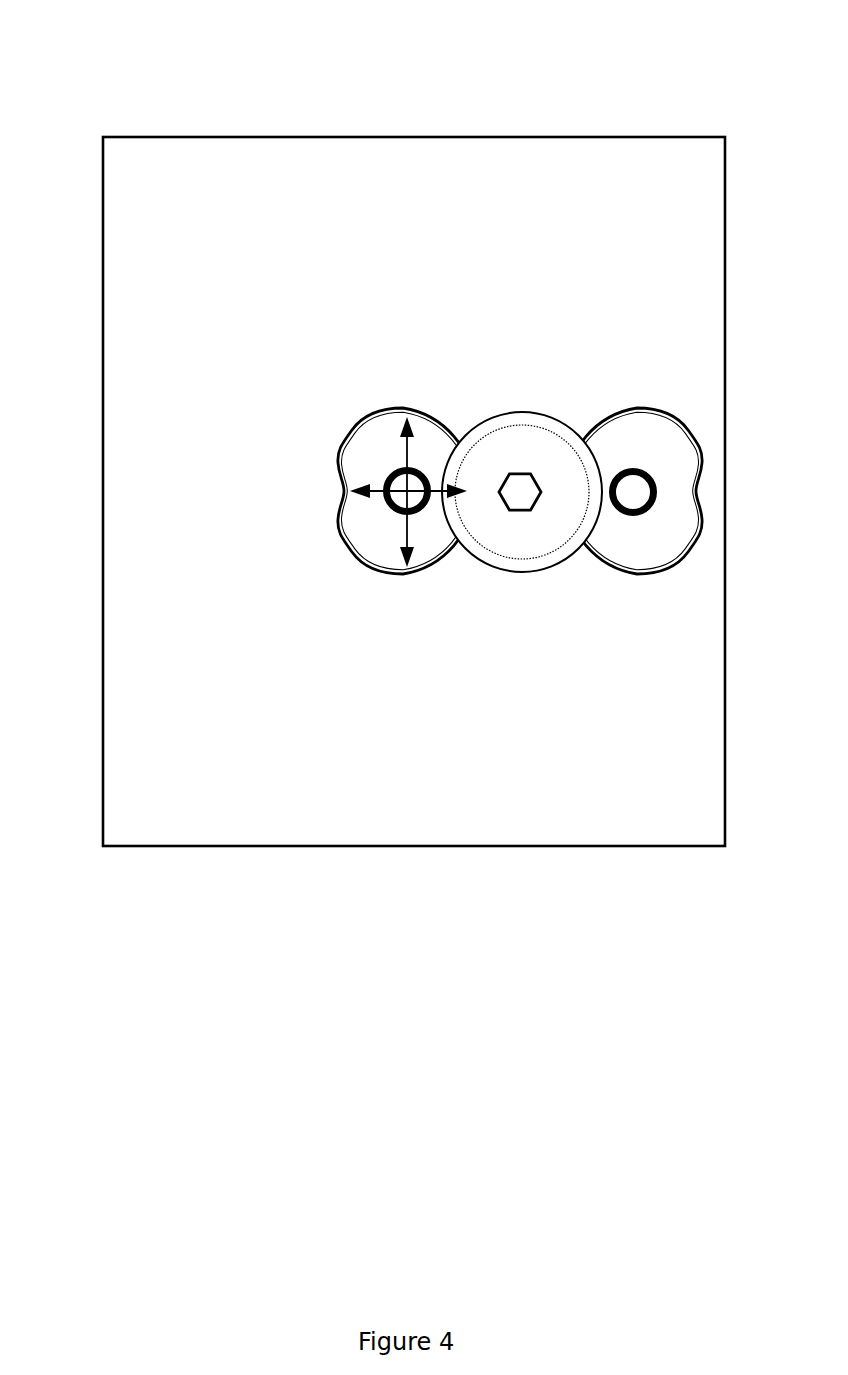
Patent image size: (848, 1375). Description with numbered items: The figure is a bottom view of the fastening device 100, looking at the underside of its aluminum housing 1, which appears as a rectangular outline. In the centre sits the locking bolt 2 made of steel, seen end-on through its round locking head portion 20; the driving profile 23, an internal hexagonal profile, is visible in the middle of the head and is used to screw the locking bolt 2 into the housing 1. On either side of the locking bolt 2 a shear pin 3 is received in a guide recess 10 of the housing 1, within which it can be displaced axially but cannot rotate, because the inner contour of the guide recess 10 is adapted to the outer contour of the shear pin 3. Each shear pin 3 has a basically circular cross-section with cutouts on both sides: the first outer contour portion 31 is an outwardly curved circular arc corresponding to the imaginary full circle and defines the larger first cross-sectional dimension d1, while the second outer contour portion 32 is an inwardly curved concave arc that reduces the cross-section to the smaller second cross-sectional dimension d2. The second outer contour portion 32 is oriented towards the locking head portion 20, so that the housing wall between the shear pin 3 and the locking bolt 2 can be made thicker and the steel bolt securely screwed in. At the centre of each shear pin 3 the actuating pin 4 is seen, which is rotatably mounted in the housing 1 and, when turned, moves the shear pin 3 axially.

The fastening device 100 is at (126, 91).
The housing 1 is at (678, 165).
The guide recess 10 is at (343, 433).
The first outer contour portion 31 is at (631, 417).
The shear pin 3 is at (382, 442).
The second outer contour portion 32 is at (348, 490).
The locking head portion 20 is at (480, 427).
The locking bolt 2 is at (512, 542).
The driving profile 23 is at (518, 487).
The actuating pin 4 is at (412, 482).
The first cross-sectional dimension d1 is at (405, 540).
The second cross-sectional dimension d2 is at (382, 492).